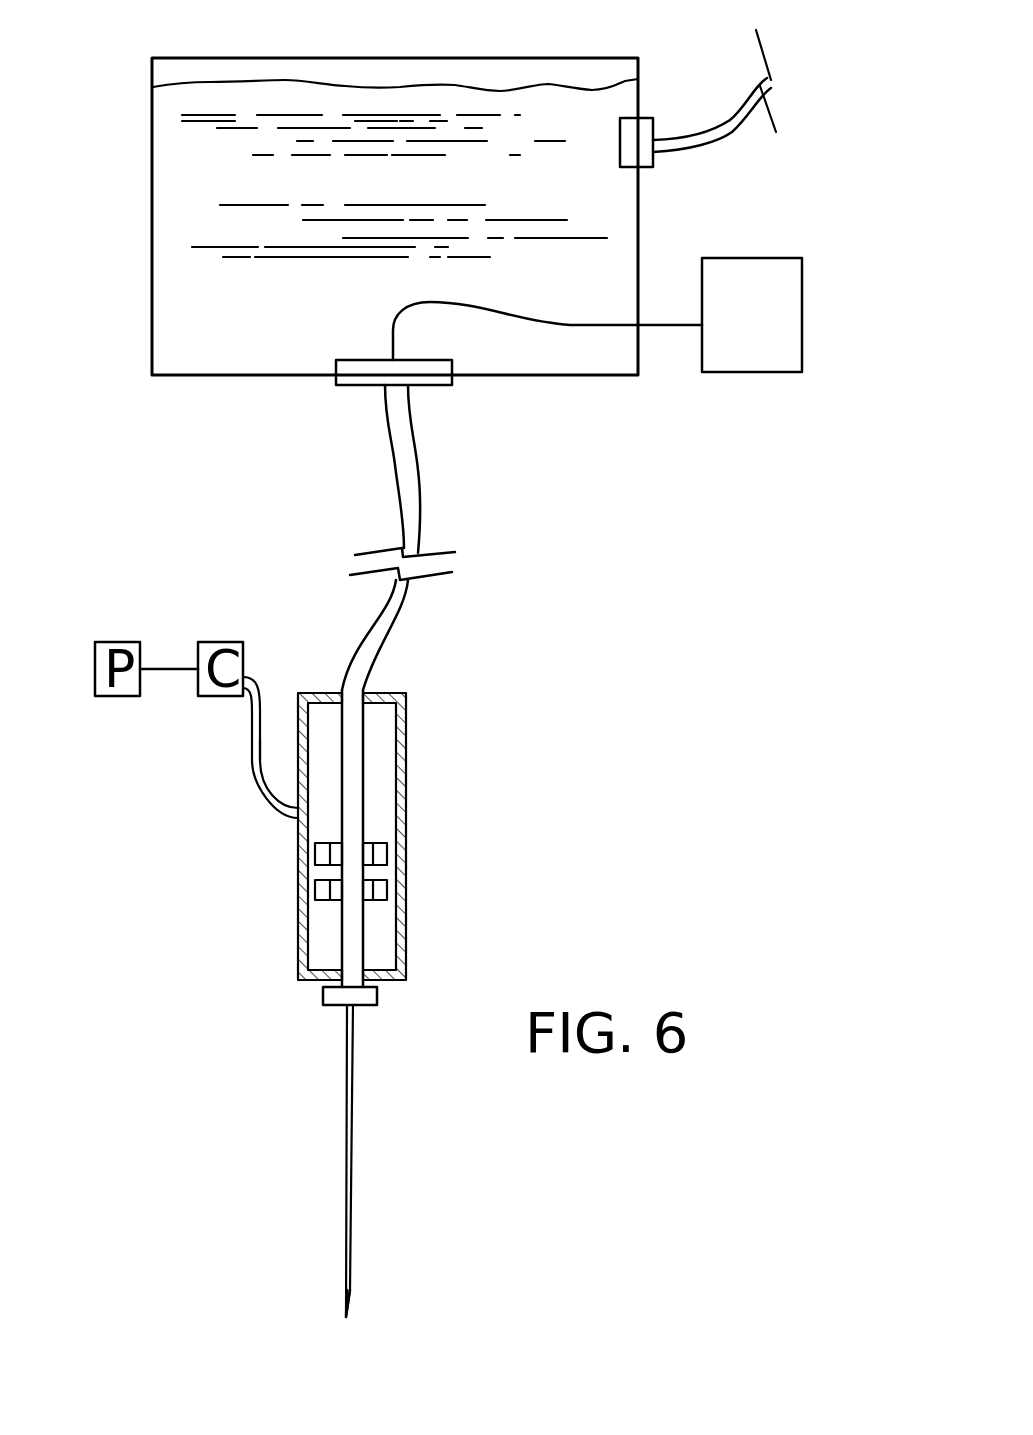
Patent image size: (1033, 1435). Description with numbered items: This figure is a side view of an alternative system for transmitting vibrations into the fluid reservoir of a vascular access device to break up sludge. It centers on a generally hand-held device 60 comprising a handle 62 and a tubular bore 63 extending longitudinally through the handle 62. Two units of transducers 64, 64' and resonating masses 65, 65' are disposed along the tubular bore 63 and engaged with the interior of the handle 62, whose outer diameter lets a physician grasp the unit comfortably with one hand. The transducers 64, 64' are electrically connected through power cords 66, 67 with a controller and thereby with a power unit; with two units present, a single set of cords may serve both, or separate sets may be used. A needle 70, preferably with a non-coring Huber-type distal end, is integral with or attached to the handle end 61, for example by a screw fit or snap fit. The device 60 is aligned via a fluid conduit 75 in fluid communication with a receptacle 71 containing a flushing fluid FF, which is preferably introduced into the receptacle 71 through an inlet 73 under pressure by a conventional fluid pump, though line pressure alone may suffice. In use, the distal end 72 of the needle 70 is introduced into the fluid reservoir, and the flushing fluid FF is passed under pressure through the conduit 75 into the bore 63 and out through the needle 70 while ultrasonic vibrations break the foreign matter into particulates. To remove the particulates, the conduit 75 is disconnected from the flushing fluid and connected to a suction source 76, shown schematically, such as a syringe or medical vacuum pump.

The hand-held device 60 is at (365, 972).
The handle end 61 is at (318, 982).
The handle 62 is at (406, 953).
The tubular bore 63 is at (365, 762).
The transducer 64 is at (425, 813).
The transducer 64' is at (254, 881).
The resonating mass 65 is at (430, 851).
The resonating mass 65' is at (266, 918).
The power cord 66 is at (253, 742).
The power cord 67 is at (261, 750).
The needle 70 is at (350, 1205).
The receptacle 71 is at (638, 212).
The distal end 72 is at (350, 1305).
The inlet 73 is at (655, 118).
The fluid conduit 75 is at (415, 471).
The suction source 76 is at (782, 258).
The flushing fluid FF is at (182, 284).